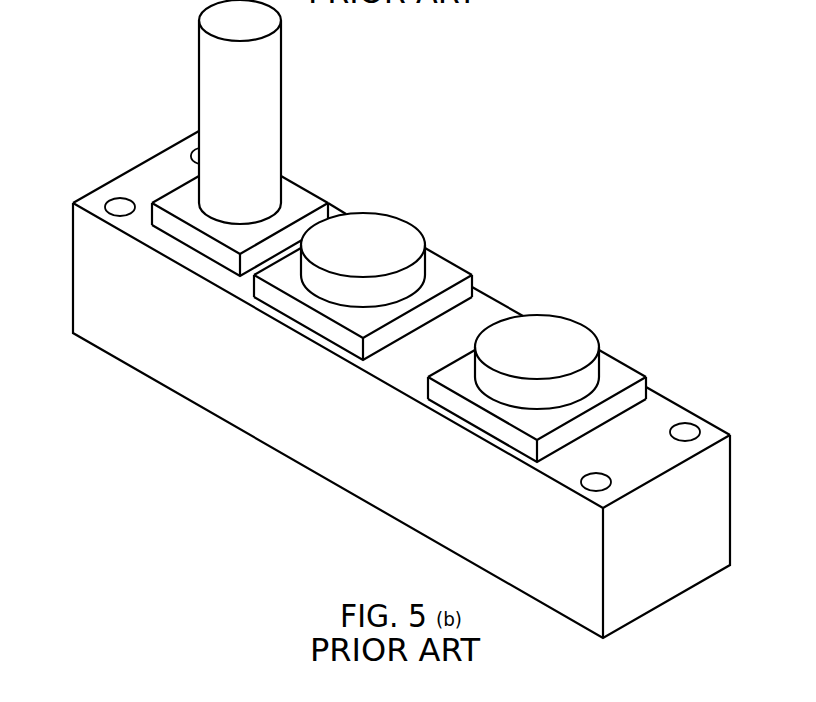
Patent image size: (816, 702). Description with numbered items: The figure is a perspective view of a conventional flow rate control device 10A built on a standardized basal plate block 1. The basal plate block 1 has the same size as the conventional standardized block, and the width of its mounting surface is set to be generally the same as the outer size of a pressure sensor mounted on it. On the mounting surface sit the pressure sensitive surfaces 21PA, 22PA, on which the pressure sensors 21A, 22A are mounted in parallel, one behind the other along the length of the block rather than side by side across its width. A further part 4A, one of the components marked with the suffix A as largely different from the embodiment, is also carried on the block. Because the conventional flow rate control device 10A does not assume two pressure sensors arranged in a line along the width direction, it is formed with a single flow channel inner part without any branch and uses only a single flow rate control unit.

The basal plate block 1 is at (242, 447).
The flow rate control device part 4A is at (281, 85).
The conventional flow rate control device 10A is at (524, 158).
The pressure sensor 21A is at (423, 221).
The pressure sensor 22A is at (592, 315).
The pressure sensitive surface 21PA is at (305, 295).
The pressure sensitive surface 22PA is at (480, 398).